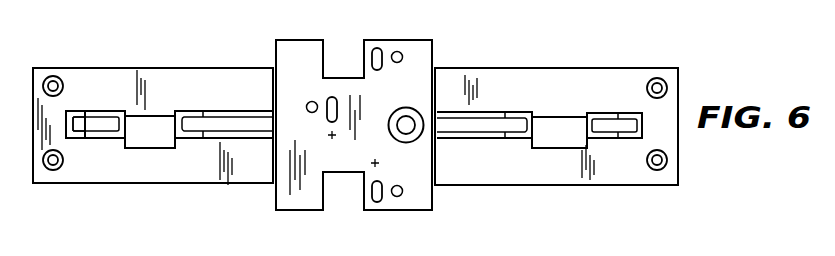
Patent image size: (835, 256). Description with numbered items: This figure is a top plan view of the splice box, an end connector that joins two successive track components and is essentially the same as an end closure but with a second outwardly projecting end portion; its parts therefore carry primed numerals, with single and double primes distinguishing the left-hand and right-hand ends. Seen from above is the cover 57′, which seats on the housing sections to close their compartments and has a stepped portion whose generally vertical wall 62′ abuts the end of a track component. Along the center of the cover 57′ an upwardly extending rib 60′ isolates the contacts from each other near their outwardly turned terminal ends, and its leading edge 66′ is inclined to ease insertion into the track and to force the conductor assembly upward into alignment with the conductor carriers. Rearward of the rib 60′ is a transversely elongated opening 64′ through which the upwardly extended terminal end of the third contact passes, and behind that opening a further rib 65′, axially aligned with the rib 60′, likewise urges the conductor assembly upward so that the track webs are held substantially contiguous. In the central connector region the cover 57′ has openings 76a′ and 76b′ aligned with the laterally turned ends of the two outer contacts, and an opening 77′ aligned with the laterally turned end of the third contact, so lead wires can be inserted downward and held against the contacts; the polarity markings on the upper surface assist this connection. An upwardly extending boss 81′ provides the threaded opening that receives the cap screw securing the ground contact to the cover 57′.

The cover 57′ is at (633, 76).
The rib 60′ is at (103, 110).
The vertical wall 62′ is at (268, 160).
The transversely elongated opening 64′ is at (143, 122).
The rib 65′ is at (213, 110).
The leading edge 66′ is at (78, 110).
The opening 76a′ is at (376, 48).
The opening 76b′ is at (377, 202).
The opening 77′ is at (332, 97).
The boss 81′ is at (411, 108).